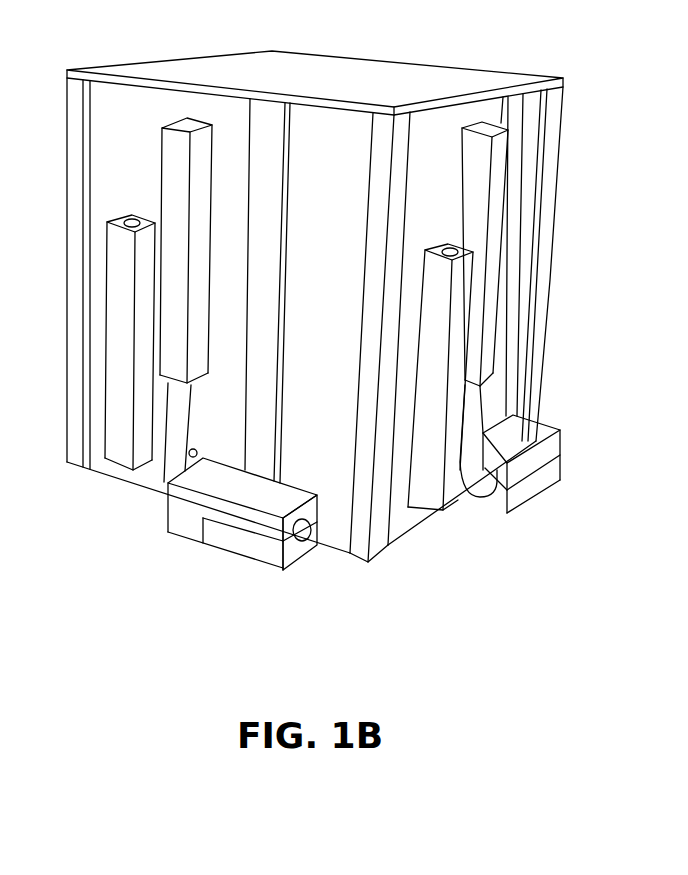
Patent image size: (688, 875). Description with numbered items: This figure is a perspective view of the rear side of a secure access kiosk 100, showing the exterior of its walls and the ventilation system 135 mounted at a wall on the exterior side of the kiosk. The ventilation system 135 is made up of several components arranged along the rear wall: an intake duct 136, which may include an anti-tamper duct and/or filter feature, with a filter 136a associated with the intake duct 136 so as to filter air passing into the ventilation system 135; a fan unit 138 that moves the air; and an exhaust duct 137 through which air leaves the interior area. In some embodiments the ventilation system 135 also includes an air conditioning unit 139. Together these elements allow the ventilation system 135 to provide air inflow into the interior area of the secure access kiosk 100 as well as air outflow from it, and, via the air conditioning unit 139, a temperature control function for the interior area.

The secure access kiosk 100 is at (565, 142).
The ventilation system 135 is at (184, 542).
The intake duct 136 is at (318, 546).
The filter 136a is at (297, 544).
The exhaust duct 137 is at (131, 220).
The fan unit 138 is at (202, 528).
The air conditioning unit 139 is at (162, 138).